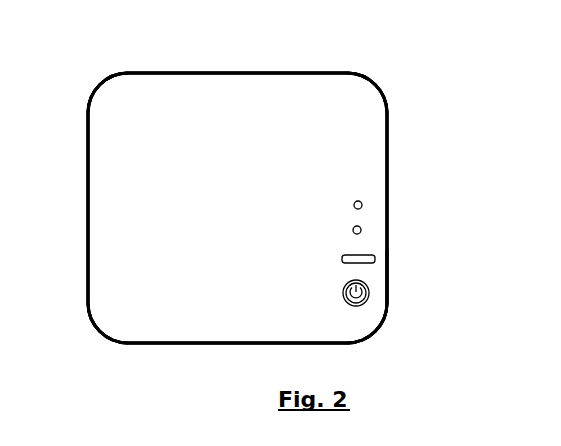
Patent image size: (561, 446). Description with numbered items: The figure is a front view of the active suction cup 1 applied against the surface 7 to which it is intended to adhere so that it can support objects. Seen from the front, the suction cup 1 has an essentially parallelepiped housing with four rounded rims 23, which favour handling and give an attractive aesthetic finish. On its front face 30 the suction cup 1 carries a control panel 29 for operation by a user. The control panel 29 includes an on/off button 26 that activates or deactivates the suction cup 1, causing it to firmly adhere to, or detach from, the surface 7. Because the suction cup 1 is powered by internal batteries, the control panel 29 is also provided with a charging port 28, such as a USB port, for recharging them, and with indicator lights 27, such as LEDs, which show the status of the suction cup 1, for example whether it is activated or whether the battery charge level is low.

The active suction cup 1 is at (440, 84).
The surface 7 is at (50, 207).
The rounded rims 23 is at (99, 80).
The on/off button 26 is at (367, 304).
The indicator lights 27 is at (361, 228).
The charging port 28 is at (375, 258).
The control panel 29 is at (394, 286).
The front face 30 is at (267, 234).